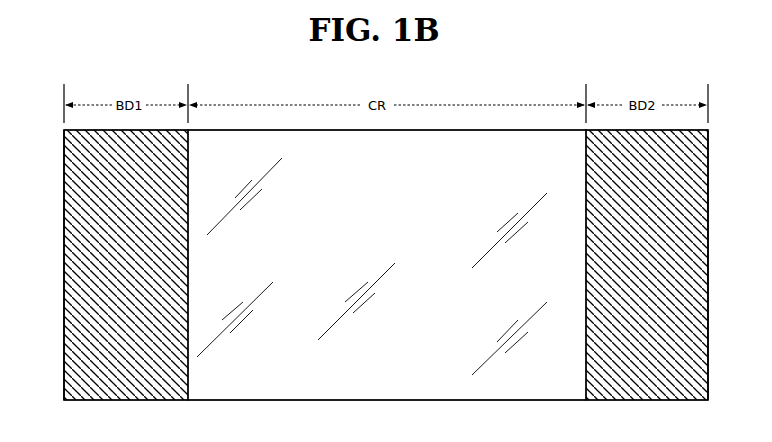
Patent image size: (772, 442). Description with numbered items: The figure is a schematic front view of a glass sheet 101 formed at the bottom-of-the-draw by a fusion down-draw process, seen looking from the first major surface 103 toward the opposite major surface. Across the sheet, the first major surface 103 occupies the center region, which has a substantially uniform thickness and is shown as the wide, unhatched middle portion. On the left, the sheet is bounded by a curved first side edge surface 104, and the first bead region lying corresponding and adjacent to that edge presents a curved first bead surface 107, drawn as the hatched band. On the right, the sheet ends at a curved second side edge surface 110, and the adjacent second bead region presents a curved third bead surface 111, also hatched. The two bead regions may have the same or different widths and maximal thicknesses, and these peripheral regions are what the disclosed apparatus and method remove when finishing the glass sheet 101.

The glass sheet 101 is at (245, 121).
The first major surface 103 is at (387, 265).
The first side edge surface 104 is at (63, 358).
The first bead surface 107 is at (126, 265).
The second side edge surface 110 is at (709, 267).
The third bead surface 111 is at (647, 265).